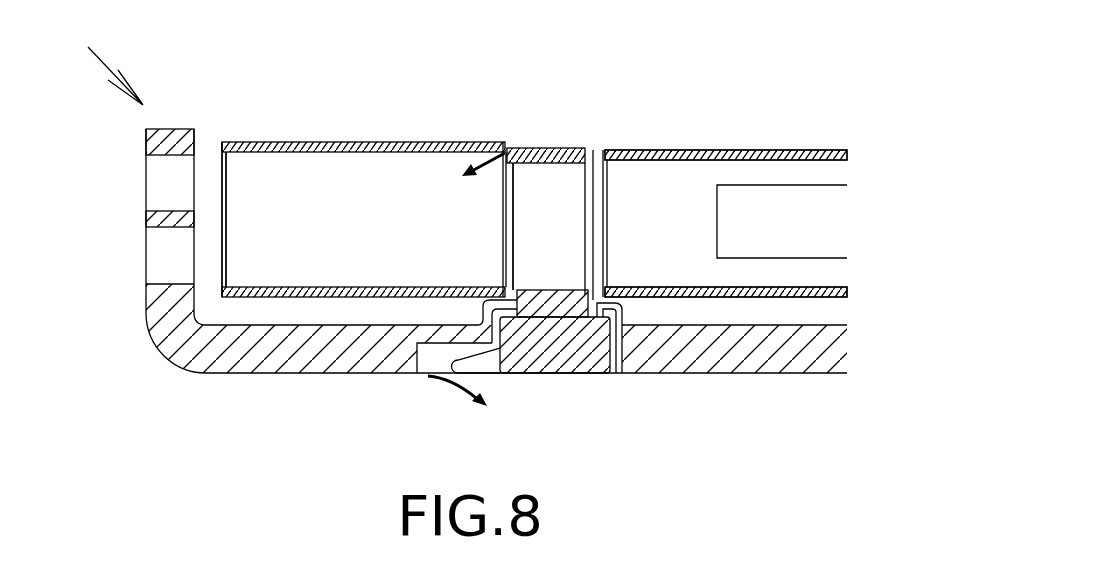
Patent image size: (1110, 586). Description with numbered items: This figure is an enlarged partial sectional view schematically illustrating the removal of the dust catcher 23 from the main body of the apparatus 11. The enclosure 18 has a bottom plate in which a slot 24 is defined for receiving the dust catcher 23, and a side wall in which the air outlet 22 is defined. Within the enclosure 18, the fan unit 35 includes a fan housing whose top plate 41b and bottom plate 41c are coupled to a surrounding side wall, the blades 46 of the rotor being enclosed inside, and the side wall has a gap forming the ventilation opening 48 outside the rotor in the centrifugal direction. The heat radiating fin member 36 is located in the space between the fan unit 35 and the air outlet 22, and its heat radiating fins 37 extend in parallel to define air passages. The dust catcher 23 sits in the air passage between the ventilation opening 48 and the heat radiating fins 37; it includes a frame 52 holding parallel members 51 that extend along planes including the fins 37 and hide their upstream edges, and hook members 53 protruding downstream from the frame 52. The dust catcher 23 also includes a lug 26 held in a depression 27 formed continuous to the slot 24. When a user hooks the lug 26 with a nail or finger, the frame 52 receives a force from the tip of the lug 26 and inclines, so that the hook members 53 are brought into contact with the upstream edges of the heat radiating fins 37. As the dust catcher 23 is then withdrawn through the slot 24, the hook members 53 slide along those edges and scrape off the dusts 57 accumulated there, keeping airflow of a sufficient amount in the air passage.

The electronic apparatus 11 is at (93, 54).
The enclosure 18 is at (148, 332).
The air outlet 22 is at (146, 155).
The dust catcher 23 is at (543, 148).
The slot 24 is at (616, 374).
The lug 26 is at (457, 362).
The depression 27 is at (421, 374).
The fan unit 35 is at (760, 150).
The heat radiating fin member 36 is at (347, 142).
The heat radiating fins 37 is at (222, 162).
The top plate 41b is at (665, 150).
The bottom plate 41c is at (709, 287).
The blades 46 is at (717, 196).
The ventilation opening 48 is at (593, 152).
The parallel members 51 is at (518, 267).
The frame 52 is at (548, 375).
The hook members 53 is at (505, 151).
The dusts 57 is at (505, 206).